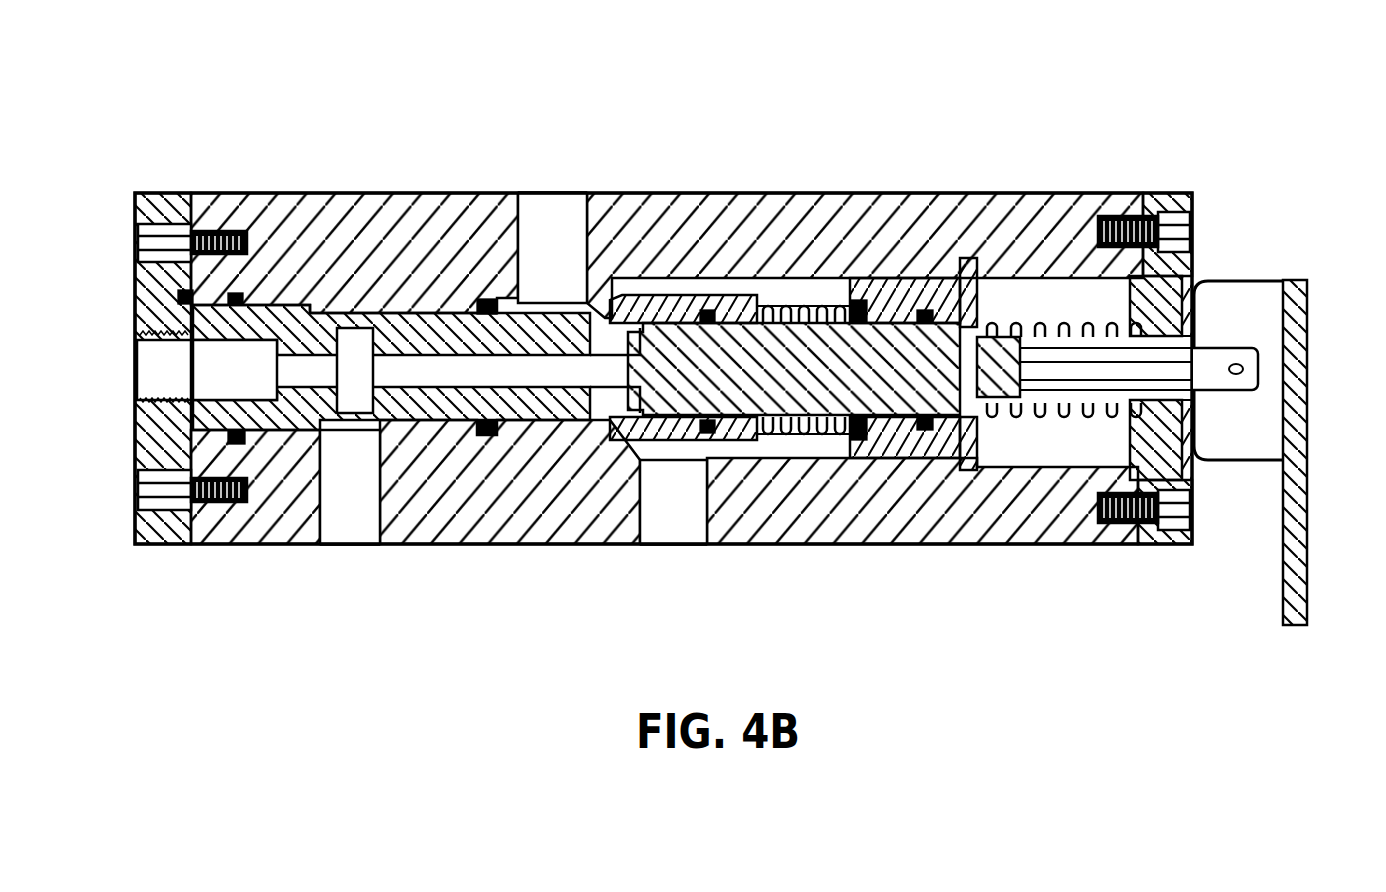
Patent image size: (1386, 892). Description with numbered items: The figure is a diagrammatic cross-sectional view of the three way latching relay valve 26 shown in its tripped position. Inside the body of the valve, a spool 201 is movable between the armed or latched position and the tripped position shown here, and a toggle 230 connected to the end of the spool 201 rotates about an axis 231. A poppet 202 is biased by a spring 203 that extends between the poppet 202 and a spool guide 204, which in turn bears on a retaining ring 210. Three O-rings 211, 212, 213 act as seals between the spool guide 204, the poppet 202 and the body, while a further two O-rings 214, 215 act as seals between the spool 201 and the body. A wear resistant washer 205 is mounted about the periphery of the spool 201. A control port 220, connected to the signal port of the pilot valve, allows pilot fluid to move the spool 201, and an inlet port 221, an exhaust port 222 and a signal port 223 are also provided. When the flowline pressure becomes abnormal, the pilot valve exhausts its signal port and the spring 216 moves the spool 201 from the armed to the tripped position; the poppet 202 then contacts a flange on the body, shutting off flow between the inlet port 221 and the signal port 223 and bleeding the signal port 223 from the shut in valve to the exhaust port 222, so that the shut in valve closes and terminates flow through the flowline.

The latching relay valve 26 is at (861, 118).
The spool 201 is at (418, 308).
The poppet 202 is at (698, 295).
The spring 203 is at (810, 300).
The spool guide 204 is at (946, 300).
The wear resistant washer 205 is at (1194, 280).
The retaining ring 210 is at (970, 265).
The O-ring 211 is at (740, 300).
The O-ring 212 is at (895, 297).
The O-ring 213 is at (931, 424).
The O-ring 214 is at (240, 298).
The O-ring 215 is at (485, 297).
The spring 216 is at (1068, 322).
The control port 220 is at (150, 338).
The inlet port 221 is at (679, 500).
The exhaust port 222 is at (376, 512).
The signal port 223 is at (582, 213).
The toggle 230 is at (1283, 278).
The axis 231 is at (1240, 372).